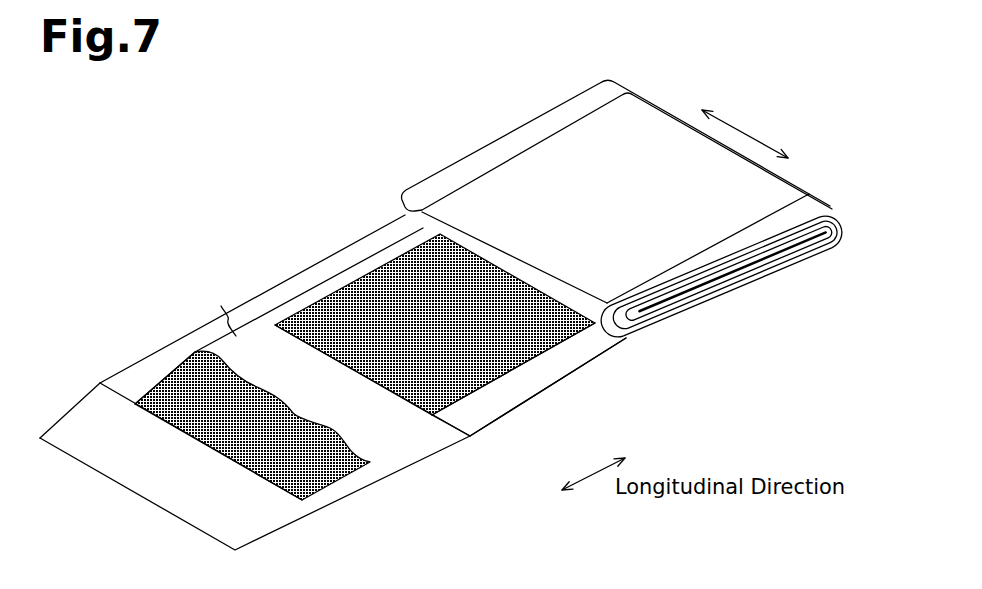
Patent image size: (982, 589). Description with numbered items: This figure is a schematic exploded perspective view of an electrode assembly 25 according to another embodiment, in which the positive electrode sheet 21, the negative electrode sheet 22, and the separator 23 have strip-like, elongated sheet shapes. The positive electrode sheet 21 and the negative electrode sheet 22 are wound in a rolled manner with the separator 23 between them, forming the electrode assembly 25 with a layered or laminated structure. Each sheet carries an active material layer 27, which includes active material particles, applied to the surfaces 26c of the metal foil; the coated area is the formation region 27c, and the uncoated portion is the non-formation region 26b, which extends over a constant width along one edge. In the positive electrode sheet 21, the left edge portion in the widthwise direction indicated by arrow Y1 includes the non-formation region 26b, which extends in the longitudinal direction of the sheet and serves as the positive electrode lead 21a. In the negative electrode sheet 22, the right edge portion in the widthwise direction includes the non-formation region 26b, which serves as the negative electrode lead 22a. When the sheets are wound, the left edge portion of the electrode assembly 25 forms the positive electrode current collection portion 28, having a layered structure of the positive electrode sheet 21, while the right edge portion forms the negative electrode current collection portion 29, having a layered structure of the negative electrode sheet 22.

The electrode assembly 25 is at (205, 170).
The positive electrode sheet 21 is at (130, 367).
The positive electrode lead 21a is at (261, 309).
The negative electrode sheet 22 is at (393, 258).
The negative electrode lead 22a is at (527, 395).
The separator 23 is at (238, 337).
The non-formation region 26b is at (261, 309).
The surfaces 26c is at (178, 352).
The active material layer 27 is at (365, 368).
The formation region 27c is at (323, 310).
The positive electrode current collection portion 28 is at (488, 133).
The negative electrode current collection portion 29 is at (743, 300).
The arrow indicating longitudinal direction of case Y1 is at (734, 122).